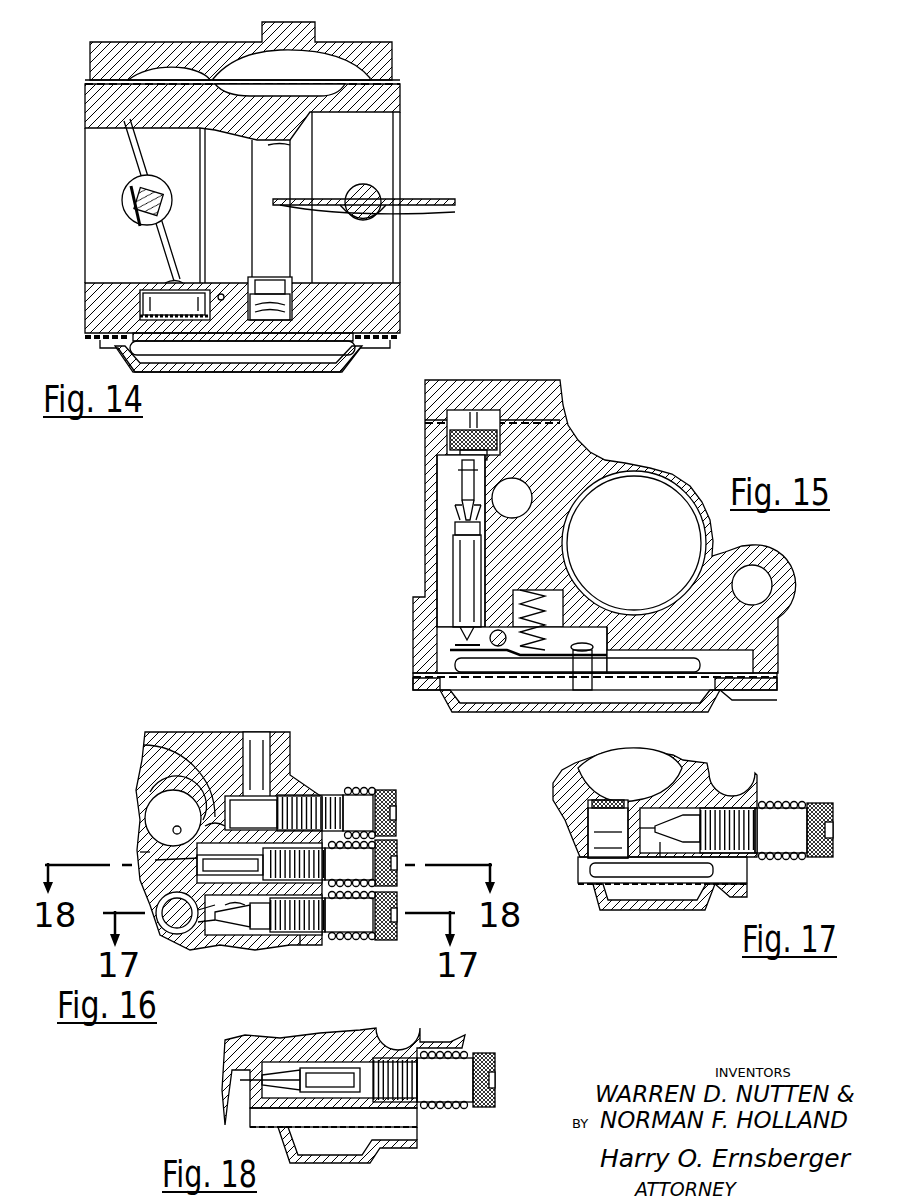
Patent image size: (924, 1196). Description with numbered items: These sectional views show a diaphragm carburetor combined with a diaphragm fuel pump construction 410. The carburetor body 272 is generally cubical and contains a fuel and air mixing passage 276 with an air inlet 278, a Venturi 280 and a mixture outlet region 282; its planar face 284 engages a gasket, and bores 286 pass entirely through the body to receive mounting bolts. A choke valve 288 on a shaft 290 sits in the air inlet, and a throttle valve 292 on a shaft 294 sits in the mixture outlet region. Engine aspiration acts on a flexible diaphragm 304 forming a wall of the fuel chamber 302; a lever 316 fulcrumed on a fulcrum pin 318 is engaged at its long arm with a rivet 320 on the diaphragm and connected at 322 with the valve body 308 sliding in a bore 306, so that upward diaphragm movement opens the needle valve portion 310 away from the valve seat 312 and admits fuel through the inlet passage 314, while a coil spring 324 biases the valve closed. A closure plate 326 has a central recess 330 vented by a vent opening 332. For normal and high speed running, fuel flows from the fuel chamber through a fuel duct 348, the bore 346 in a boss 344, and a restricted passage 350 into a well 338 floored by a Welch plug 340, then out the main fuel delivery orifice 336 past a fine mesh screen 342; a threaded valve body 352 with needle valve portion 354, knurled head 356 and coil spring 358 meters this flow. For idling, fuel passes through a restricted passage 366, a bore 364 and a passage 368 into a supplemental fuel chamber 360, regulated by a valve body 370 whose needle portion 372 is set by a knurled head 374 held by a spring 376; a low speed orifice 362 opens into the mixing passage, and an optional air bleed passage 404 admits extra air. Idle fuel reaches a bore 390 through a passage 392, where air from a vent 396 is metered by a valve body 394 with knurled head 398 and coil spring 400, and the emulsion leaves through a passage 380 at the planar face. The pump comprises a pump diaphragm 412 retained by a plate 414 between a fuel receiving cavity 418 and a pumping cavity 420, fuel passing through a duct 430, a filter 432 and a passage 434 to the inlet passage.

In FIG. 14, the carburetor body 272 is at (97, 102).
In FIG. 15, the carburetor body 272 is at (592, 463).
In FIG. 16, the carburetor body 272 is at (197, 748).
In FIG. 14, the fuel and air mixing passage 276 is at (223, 162).
In FIG. 14, the air inlet 278 is at (378, 158).
In FIG. 14, the Venturi 280 is at (268, 147).
In FIG. 14, the mixture outlet region 282 is at (122, 157).
In FIG. 14, the planar face 284 is at (85, 300).
In FIG. 16, the planar face 284 is at (220, 722).
In FIG. 15, the bores 286 is at (527, 487).
In FIG. 17, the bores 286 is at (720, 773).
In FIG. 18, the bores 286 is at (410, 1010).
In FIG. 14, the choke valve 288 is at (455, 201).
In FIG. 14, the shaft 290 is at (368, 188).
In FIG. 14, the throttle valve 292 is at (130, 197).
In FIG. 14, the shaft 294 is at (135, 183).
In FIG. 14, the fuel chamber 302 is at (353, 322).
In FIG. 15, the fuel chamber 302 is at (690, 662).
In FIG. 16, the fuel chamber 302 is at (140, 852).
In FIG. 17, the fuel chamber 302 is at (705, 877).
In FIG. 18, the fuel chamber 302 is at (280, 1115).
In FIG. 15, the flexible diaphragm 304 is at (490, 690).
In FIG. 18, the flexible diaphragm 304 is at (280, 1130).
In FIG. 15, the bore 306 is at (455, 565).
In FIG. 15, the valve body 308 is at (455, 583).
In FIG. 15, the needle valve portion 310 is at (452, 532).
In FIG. 15, the valve seat 312 is at (457, 515).
In FIG. 15, the inlet passage 314 is at (465, 497).
In FIG. 15, the lever 316 is at (548, 612).
In FIG. 15, the fulcrum pin 318 is at (450, 652).
In FIG. 15, the rivet 320 is at (500, 675).
In FIG. 15, the articulate connection 322 is at (458, 633).
In FIG. 15, the coil spring 324 is at (556, 626).
In FIG. 15, the closure plate 326 is at (710, 700).
In FIG. 17, the closure plate 326 is at (725, 895).
In FIG. 18, the closure plate 326 is at (373, 1157).
In FIG. 15, the central recess 330 is at (690, 690).
In FIG. 15, the vent opening 332 is at (575, 692).
In FIG. 14, the main fuel delivery orifice 336 is at (272, 272).
In FIG. 17, the main fuel delivery orifice 336 is at (636, 778).
In FIG. 14, the well 338 is at (295, 300).
In FIG. 17, the well 338 is at (592, 850).
In FIG. 14, the Welch plug 340 is at (262, 335).
In FIG. 17, the Welch plug 340 is at (592, 870).
In FIG. 14, the fine mesh screen 342 is at (253, 297).
In FIG. 16, the fine mesh screen 342 is at (163, 908).
In FIG. 17, the fine mesh screen 342 is at (605, 822).
In FIG. 16, the boss 344 is at (310, 940).
In FIG. 16, the bore 346 is at (225, 915).
In FIG. 17, the bore 346 is at (685, 845).
In FIG. 17, the fuel duct 348 is at (660, 860).
In FIG. 16, the restricted passage 350 is at (220, 917).
In FIG. 17, the restricted passage 350 is at (600, 840).
In FIG. 16, the valve body 352 is at (363, 938).
In FIG. 17, the valve body 352 is at (762, 825).
In FIG. 16, the needle valve portion 354 is at (232, 915).
In FIG. 17, the needle valve portion 354 is at (658, 840).
In FIG. 16, the knurled head 356 is at (350, 907).
In FIG. 16, the coil spring 358 is at (350, 940).
In FIG. 14, the supplemental fuel chamber 360 is at (170, 302).
In FIG. 16, the supplemental fuel chamber 360 is at (160, 797).
In FIG. 14, the low speed orifice 362 is at (183, 278).
In FIG. 16, the low speed orifice 362 is at (217, 820).
In FIG. 16, the bore 364 is at (215, 905).
In FIG. 18, the bore 364 is at (353, 1067).
In FIG. 14, the restricted passage 366 is at (217, 297).
In FIG. 16, the restricted passage 366 is at (197, 865).
In FIG. 18, the restricted passage 366 is at (297, 1080).
In FIG. 16, the passage 368 is at (160, 810).
In FIG. 16, the valve body 370 is at (343, 862).
In FIG. 18, the valve body 370 is at (393, 1073).
In FIG. 16, the needle portion 372 is at (185, 857).
In FIG. 18, the needle portion 372 is at (287, 1078).
In FIG. 16, the knurled head 374 is at (397, 870).
In FIG. 18, the knurled head 374 is at (490, 1058).
In FIG. 16, the spring 376 is at (370, 847).
In FIG. 18, the spring 376 is at (453, 1063).
In FIG. 16, the passage 380 is at (257, 737).
In FIG. 16, the bore 390 is at (250, 812).
In FIG. 16, the passage 392 is at (145, 755).
In FIG. 16, the valve body 394 is at (343, 800).
In FIG. 16, the vent 396 is at (297, 790).
In FIG. 16, the knurled head 398 is at (397, 800).
In FIG. 16, the coil spring 400 is at (352, 785).
In FIG. 14, the air bleed passage 404 is at (217, 262).
In FIG. 14, the fuel pump construction 410 is at (384, 42).
In FIG. 14, the pump diaphragm 412 is at (257, 77).
In FIG. 14, the plate 414 is at (98, 53).
In FIG. 14, the cavity 418 is at (345, 90).
In FIG. 14, the cavity 420 is at (307, 65).
In FIG. 15, the duct 430 is at (475, 425).
In FIG. 15, the filter 432 is at (450, 448).
In FIG. 15, the passage 434 is at (463, 470).